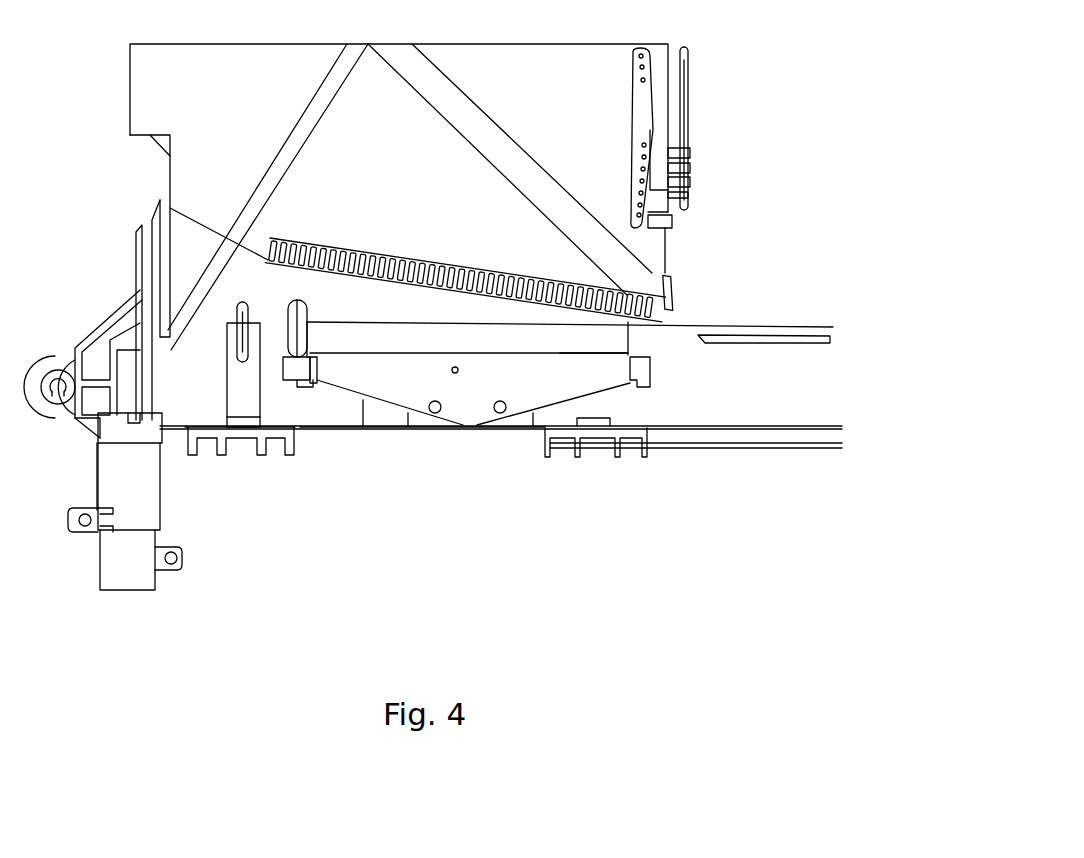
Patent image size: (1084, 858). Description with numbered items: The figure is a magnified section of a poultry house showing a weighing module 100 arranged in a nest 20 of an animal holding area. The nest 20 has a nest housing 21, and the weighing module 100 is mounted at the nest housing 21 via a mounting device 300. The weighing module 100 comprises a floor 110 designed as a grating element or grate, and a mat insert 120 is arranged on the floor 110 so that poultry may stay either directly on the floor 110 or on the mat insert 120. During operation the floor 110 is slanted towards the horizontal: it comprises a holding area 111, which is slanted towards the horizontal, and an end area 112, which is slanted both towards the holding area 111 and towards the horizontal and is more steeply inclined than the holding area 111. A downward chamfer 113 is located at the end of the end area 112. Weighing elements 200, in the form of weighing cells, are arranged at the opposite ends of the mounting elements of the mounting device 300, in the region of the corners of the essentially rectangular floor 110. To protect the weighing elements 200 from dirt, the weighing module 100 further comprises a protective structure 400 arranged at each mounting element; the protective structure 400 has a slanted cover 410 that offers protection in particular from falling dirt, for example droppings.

The nest 20 is at (595, 121).
The nest housing 21 is at (167, 440).
The weighing module 100 is at (217, 297).
The floor 110 is at (370, 282).
The holding area 111 is at (427, 290).
The end area 112 is at (200, 216).
The downward chamfer 113 is at (160, 219).
The mat insert 120 is at (577, 283).
The weighing element 200 is at (272, 377).
The mounting device 300 is at (425, 430).
The protective structure 400 is at (472, 386).
The slanted cover 410 is at (572, 347).